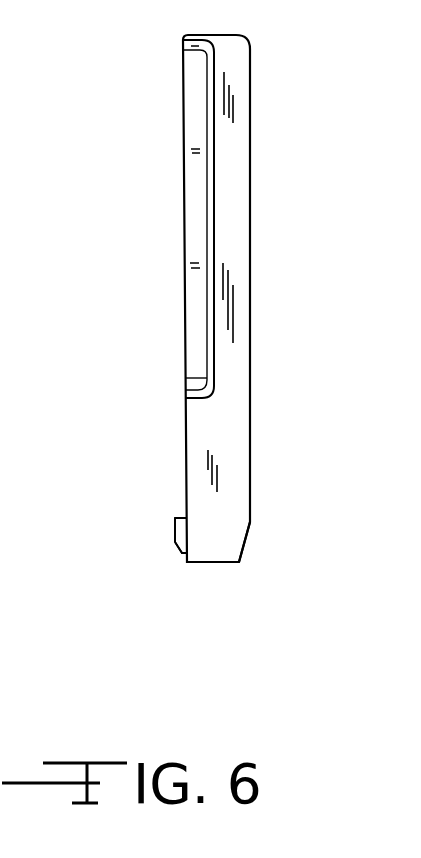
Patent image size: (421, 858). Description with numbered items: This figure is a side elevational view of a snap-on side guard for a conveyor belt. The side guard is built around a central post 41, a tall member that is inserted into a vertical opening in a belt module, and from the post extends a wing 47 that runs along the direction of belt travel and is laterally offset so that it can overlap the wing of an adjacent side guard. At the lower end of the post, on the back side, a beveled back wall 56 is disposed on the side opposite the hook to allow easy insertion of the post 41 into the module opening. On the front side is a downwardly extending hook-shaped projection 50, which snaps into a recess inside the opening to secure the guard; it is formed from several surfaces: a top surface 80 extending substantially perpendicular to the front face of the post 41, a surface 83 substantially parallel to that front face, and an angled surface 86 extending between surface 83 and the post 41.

The central post 41 is at (233, 180).
The wing 47 is at (195, 318).
The beveled back wall 56 is at (250, 537).
The top surface 80 is at (182, 518).
The surface 83 is at (173, 527).
The hook-shaped projection 50 is at (173, 530).
The angled surface 86 is at (178, 555).